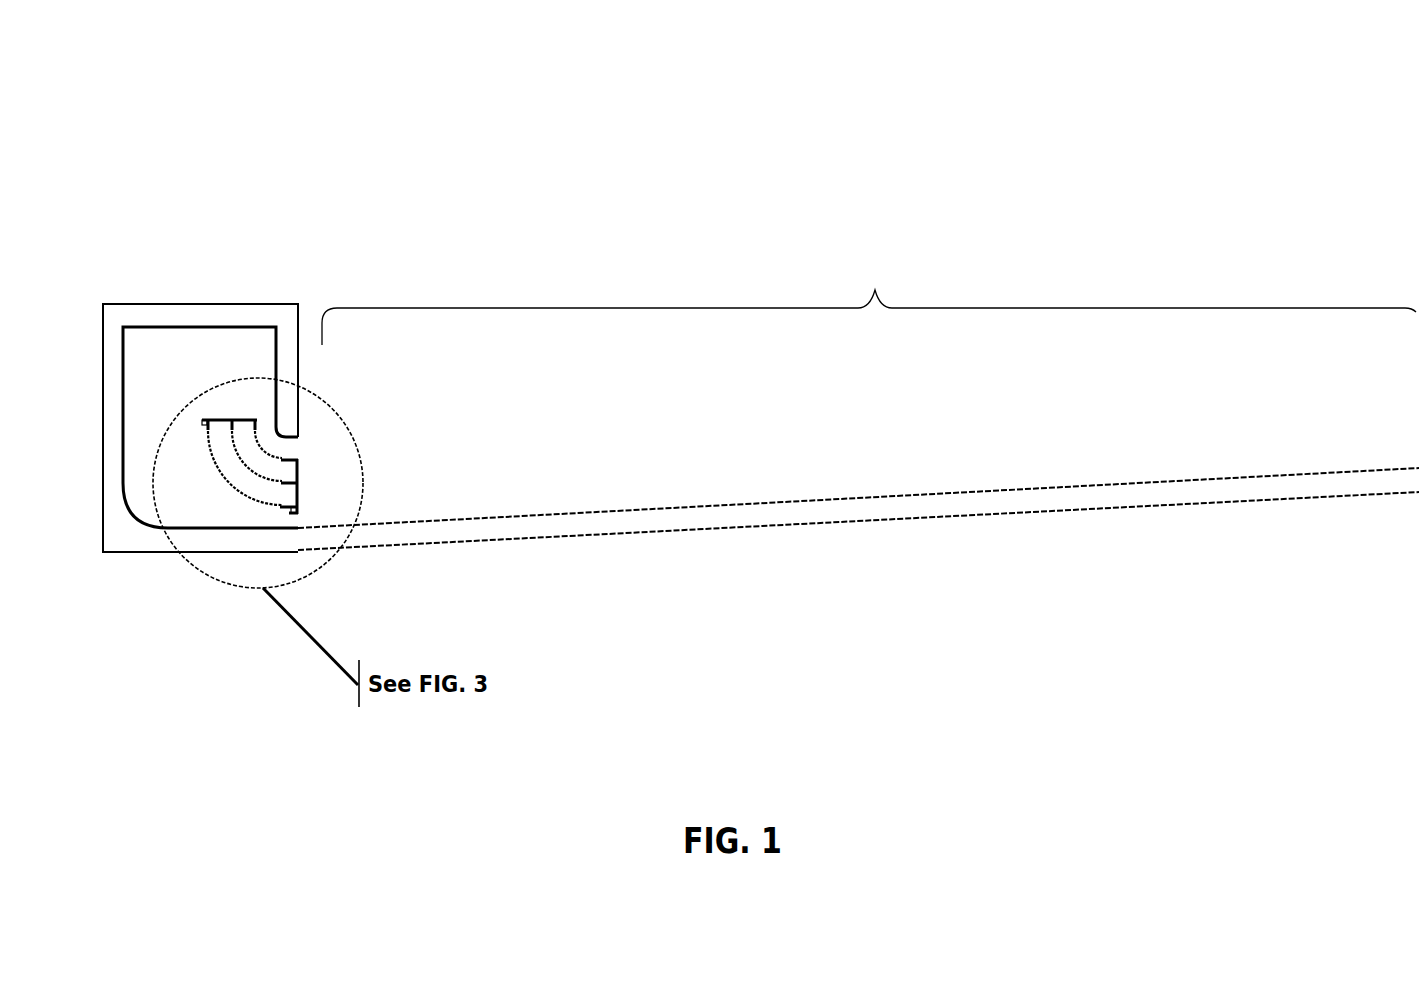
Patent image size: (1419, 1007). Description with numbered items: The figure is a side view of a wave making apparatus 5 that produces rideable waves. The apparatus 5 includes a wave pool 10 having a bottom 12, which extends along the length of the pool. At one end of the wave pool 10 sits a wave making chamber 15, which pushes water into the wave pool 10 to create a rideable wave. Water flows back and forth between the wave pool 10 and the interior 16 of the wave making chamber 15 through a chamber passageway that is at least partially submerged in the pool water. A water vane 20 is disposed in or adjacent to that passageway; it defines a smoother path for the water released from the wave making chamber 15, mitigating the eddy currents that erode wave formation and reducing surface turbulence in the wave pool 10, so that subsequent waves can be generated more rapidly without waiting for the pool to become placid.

The wave making apparatus 5 is at (771, 140).
The wave pool 10 is at (875, 290).
The bottom 12 is at (710, 505).
The wave making chamber 15 is at (284, 308).
The interior 16 is at (215, 346).
The water vane 20 is at (285, 457).